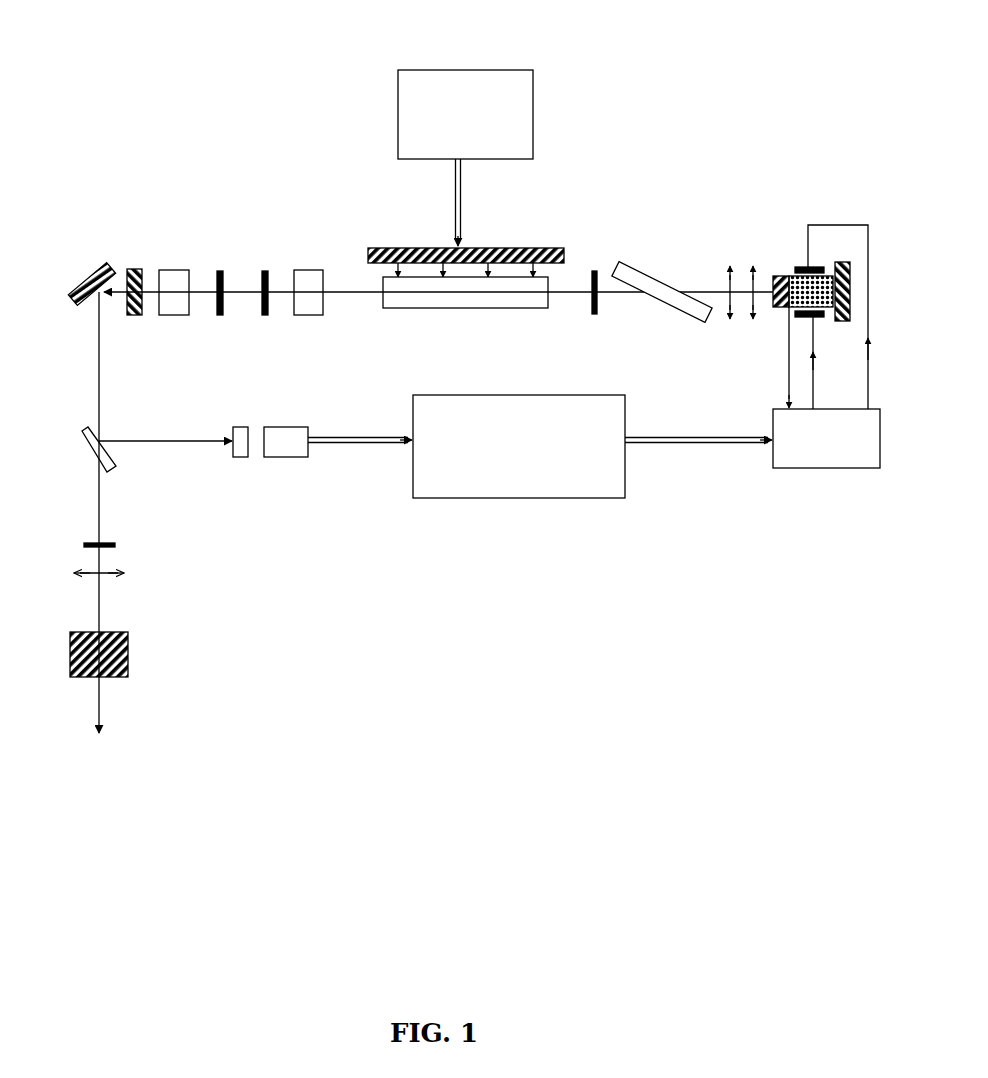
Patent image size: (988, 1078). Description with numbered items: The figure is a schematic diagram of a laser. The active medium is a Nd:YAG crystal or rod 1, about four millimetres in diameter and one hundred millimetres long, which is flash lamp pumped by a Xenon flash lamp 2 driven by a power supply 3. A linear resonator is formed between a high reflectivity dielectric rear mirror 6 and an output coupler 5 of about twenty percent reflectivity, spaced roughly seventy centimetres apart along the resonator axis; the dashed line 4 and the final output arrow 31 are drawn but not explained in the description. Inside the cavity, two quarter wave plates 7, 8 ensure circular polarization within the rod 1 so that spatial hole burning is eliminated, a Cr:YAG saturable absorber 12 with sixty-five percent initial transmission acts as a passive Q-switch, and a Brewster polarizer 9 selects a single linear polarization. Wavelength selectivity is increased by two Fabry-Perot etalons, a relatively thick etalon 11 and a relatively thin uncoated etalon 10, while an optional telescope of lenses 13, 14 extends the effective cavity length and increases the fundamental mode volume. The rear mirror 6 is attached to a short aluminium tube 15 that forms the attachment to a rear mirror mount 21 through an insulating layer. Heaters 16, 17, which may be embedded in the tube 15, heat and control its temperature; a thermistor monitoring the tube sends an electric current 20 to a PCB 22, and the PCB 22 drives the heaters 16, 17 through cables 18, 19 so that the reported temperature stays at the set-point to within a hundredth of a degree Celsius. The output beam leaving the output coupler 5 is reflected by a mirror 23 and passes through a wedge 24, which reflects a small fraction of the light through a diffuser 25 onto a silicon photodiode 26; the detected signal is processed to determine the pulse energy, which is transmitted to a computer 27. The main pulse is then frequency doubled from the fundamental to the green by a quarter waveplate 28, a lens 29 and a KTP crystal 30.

The Nd:YAG crystal or rod 1 is at (455, 308).
The Xenon flash lamp 2 is at (548, 245).
The power supply 3 is at (465, 158).
The optical axis 4 is at (338, 290).
The output coupler 5 is at (134, 267).
The rear mirror 6 is at (780, 274).
The quarter wave plate 7 is at (264, 268).
The quarter wave plate 8 is at (594, 320).
The Brewster polarizer 9 is at (655, 278).
The second relatively thin uncoated etalon 10 is at (218, 268).
The first relatively thick etalon 11 is at (309, 268).
The saturable absorber 12 is at (173, 268).
The lens 13 is at (730, 262).
The lens 14 is at (752, 262).
The aluminium tube 15 is at (828, 274).
The heater 16 is at (804, 264).
The heater 17 is at (801, 320).
The cable 18 is at (839, 224).
The cable 19 is at (814, 388).
The electric current 20 is at (786, 368).
The rear mirror mount 21 is at (852, 262).
The PCB 22 is at (826, 438).
The mirror 23 is at (84, 276).
The wedge 24 is at (80, 425).
The diffuser 25 is at (242, 460).
The silicon photodiode 26 is at (338, 442).
The computer 27 is at (592, 446).
The quarter waveplate 28 is at (118, 547).
The lens 29 is at (133, 578).
The KTP crystal 30 is at (132, 660).
The output beam 31 is at (93, 528).